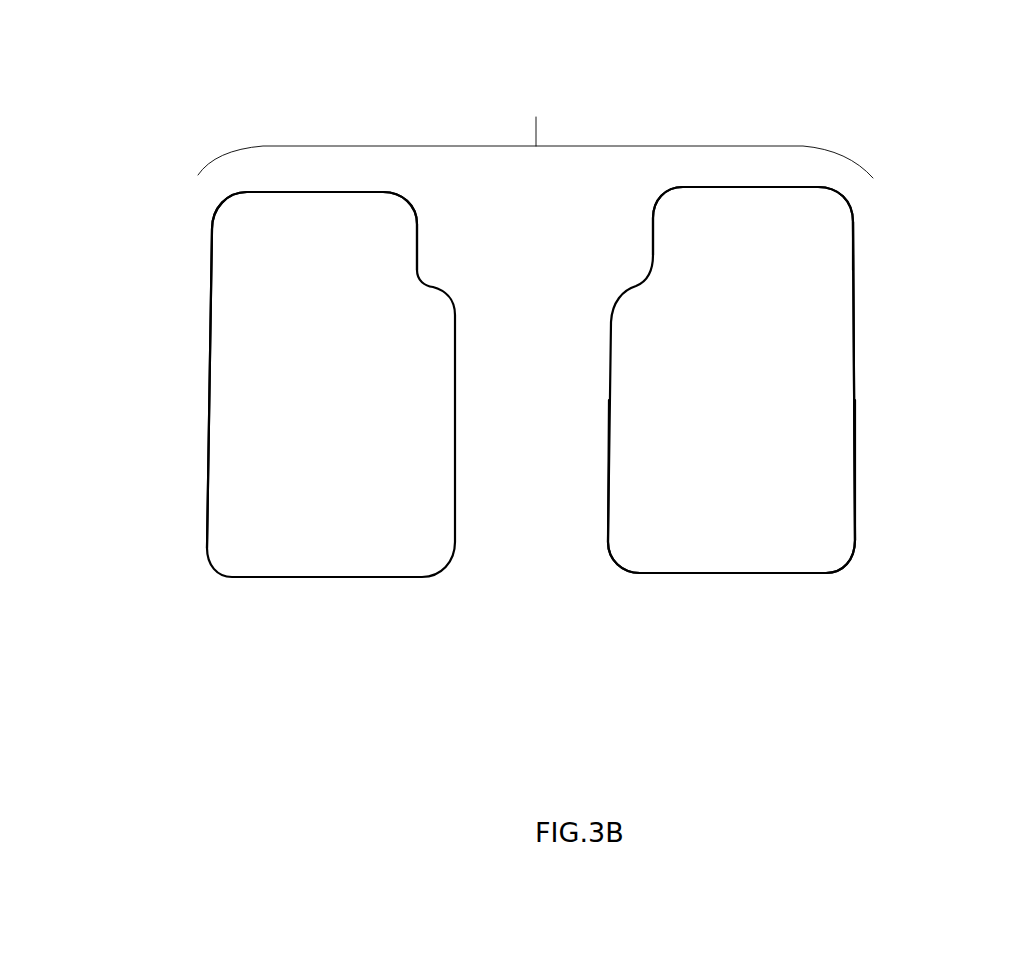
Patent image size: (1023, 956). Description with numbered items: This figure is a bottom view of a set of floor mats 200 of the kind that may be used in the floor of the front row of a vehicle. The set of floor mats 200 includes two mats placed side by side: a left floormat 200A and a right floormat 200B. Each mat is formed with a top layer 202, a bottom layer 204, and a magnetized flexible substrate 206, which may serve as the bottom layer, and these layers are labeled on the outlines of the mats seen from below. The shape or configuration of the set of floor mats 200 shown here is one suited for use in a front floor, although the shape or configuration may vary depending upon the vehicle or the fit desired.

The set of floor mats 200 is at (633, 88).
The left floormat 200A is at (208, 553).
The right floormat 200B is at (850, 557).
The top layer 202 is at (211, 352).
The bottom layer 204 is at (236, 327).
The magnetized flexible substrate 206 is at (817, 451).